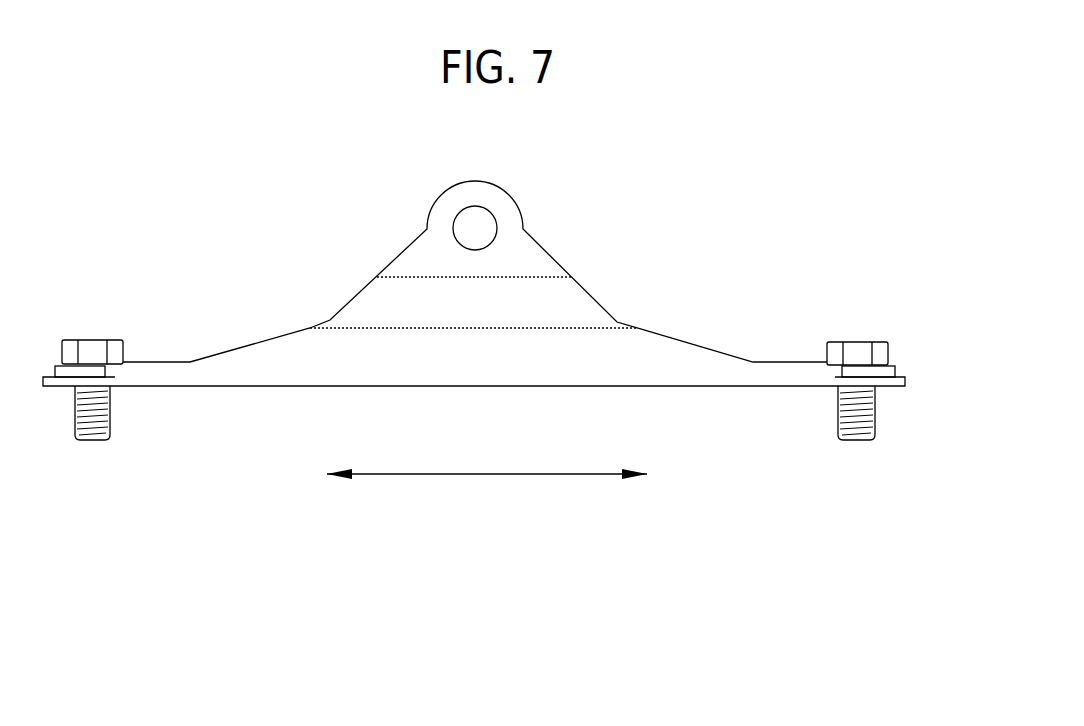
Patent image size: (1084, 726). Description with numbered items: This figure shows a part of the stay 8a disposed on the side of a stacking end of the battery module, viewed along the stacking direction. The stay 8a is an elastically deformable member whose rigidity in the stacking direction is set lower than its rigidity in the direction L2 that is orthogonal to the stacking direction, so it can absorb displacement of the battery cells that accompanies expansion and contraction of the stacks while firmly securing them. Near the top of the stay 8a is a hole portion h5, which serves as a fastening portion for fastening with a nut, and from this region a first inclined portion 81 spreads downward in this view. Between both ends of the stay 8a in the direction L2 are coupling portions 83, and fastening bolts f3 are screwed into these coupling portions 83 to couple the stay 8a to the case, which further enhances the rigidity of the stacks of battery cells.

The stay 8a is at (625, 187).
The first inclined portion 81 is at (357, 293).
The coupling portion 83 is at (897, 379).
The hole portion h5 is at (470, 220).
The fastening bolt f3 is at (860, 341).
The direction orthogonal to the stacking direction L2 is at (500, 476).